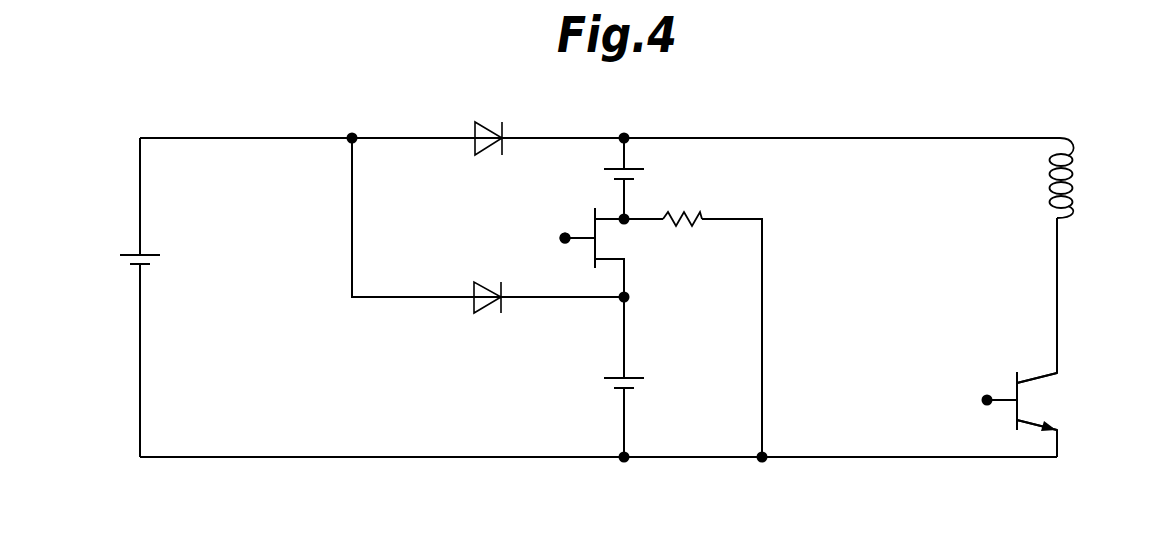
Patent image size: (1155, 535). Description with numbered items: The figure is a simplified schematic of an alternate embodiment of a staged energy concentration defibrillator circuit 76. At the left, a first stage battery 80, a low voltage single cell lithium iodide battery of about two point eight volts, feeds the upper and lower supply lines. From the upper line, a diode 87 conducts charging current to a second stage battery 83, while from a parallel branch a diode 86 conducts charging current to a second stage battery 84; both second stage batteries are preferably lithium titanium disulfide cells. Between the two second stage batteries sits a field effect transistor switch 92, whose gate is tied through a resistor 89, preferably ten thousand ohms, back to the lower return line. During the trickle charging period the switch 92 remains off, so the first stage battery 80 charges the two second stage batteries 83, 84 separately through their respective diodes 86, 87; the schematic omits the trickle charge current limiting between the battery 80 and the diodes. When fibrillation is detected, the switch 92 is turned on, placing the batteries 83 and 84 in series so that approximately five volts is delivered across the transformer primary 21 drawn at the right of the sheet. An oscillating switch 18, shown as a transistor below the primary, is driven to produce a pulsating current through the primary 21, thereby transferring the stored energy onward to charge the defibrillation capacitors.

The circuit 76 is at (140, 192).
The first stage battery 80 is at (136, 266).
The diode 87 is at (480, 122).
The diode 86 is at (478, 283).
The second stage battery 83 is at (617, 168).
The second stage battery 84 is at (617, 378).
The field effect transistor switch 92 is at (563, 236).
The resistor 89 is at (677, 215).
The transformer primary 21 is at (1076, 185).
The oscillating switch 18 is at (1030, 420).